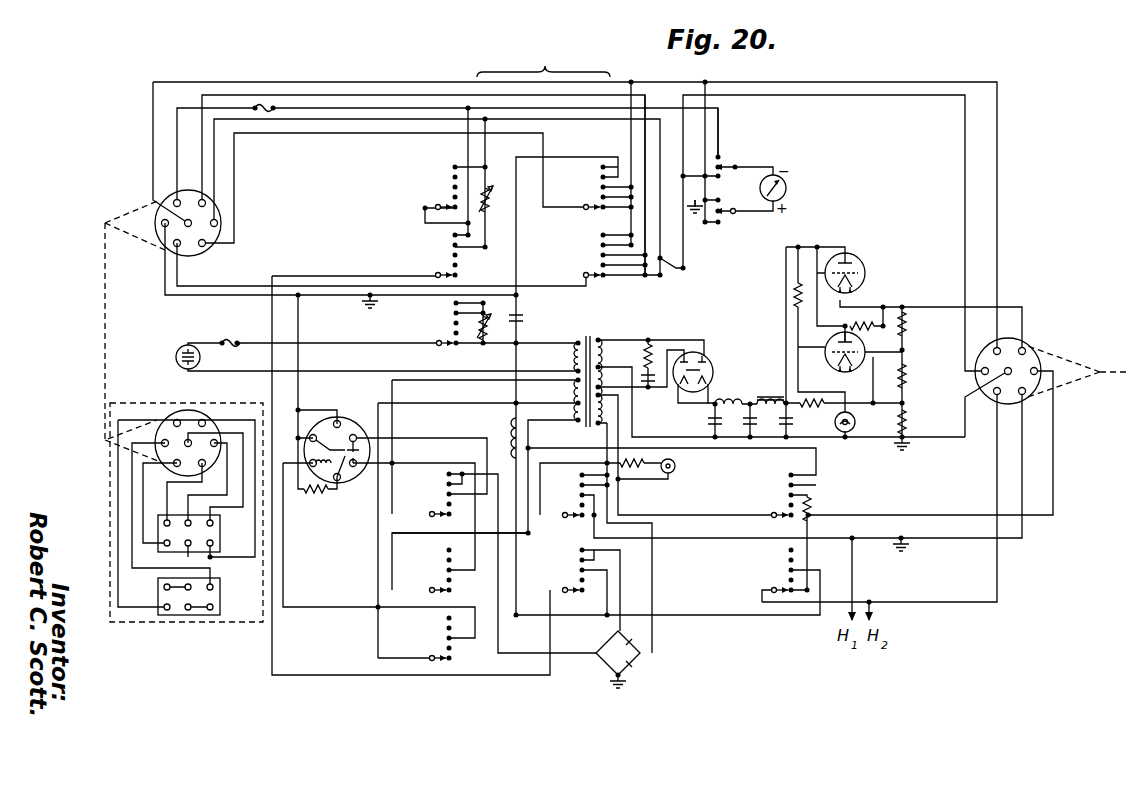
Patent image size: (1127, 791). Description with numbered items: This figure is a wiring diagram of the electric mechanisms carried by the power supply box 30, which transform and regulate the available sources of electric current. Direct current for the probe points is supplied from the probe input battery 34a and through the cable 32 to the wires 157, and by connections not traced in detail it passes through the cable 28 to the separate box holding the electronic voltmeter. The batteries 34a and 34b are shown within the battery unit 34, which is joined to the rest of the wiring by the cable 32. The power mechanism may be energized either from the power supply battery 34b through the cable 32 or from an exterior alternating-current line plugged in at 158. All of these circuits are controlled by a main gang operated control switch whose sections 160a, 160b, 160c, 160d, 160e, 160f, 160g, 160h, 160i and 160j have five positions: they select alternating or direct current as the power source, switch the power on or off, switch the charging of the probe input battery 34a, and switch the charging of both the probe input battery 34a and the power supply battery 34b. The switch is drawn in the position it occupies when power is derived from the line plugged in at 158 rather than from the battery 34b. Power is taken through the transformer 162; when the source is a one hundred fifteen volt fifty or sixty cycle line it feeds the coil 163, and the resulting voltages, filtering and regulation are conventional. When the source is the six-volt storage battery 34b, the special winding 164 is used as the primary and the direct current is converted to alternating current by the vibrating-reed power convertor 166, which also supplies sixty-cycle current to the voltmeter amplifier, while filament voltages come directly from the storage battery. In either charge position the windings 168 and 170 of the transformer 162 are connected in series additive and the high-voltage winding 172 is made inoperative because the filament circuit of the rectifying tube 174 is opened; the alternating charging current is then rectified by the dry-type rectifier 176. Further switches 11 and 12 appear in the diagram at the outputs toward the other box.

The switch 11 is at (748, 491).
The switch 12 is at (775, 571).
The cable 28 is at (1051, 371).
The power supply box 30 is at (543, 58).
The cable 32 is at (96, 309).
The battery unit 34 is at (175, 622).
The probe input battery 34a is at (162, 550).
The power supply battery 34b is at (213, 620).
The wires 157 is at (201, 86).
The A. C. line plug 158 is at (182, 348).
The control switch section 160a is at (421, 188).
The control switch section 160b is at (426, 256).
The control switch section 160c is at (578, 188).
The control switch section 160d is at (578, 256).
The control switch section 160e is at (442, 324).
The control switch section 160f is at (420, 477).
The control switch section 160g is at (565, 496).
The control switch section 160h is at (460, 563).
The control switch section 160i is at (557, 571).
The control switch section 160j is at (415, 639).
The transformer 162 is at (603, 333).
The coil 163 is at (572, 358).
The special winding 164 is at (572, 394).
The vibrating-reed power convertor 166 is at (342, 420).
The winding 168 is at (606, 409).
The winding 170 is at (572, 412).
The high-voltage winding 172 is at (599, 354).
The rectifying tube 174 is at (707, 361).
The dry-type rectifier 176 is at (500, 334).